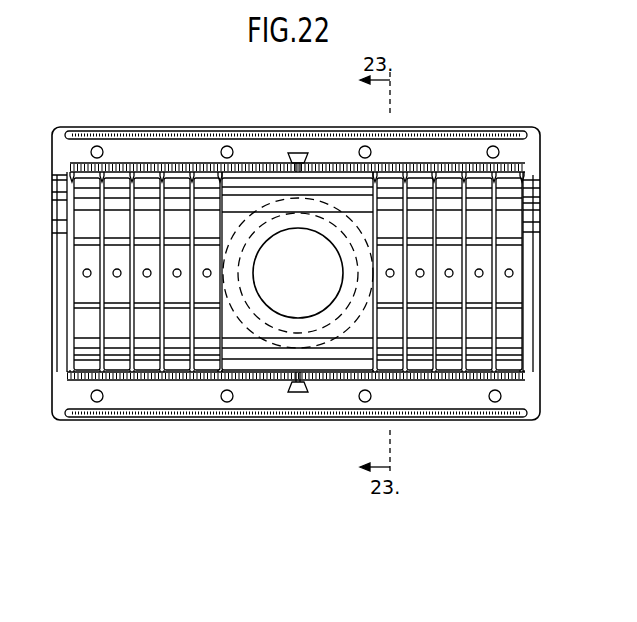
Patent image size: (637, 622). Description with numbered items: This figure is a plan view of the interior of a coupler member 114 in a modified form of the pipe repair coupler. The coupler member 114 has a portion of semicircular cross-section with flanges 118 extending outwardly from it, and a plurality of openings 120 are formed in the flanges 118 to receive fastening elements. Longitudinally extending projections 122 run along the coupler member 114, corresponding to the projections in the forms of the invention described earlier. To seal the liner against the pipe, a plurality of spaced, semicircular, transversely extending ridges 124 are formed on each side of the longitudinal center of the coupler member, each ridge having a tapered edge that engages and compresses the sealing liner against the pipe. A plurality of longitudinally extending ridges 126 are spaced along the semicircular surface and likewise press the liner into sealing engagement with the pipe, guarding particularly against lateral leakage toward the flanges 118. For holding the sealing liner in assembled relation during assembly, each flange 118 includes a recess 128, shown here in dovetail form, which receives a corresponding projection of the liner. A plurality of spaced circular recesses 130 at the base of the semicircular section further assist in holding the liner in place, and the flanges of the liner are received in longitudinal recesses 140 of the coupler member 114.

The coupler member 114 is at (539, 325).
The flanges 118 is at (522, 150).
The openings 120 is at (228, 141).
The longitudinally extending projections 122 is at (463, 137).
The transversely extending ridges 124 is at (463, 255).
The longitudinally extending ridges 126 is at (507, 213).
The recess 128 is at (304, 140).
The circular recesses 130 is at (209, 277).
The longitudinal recesses 140 is at (510, 172).